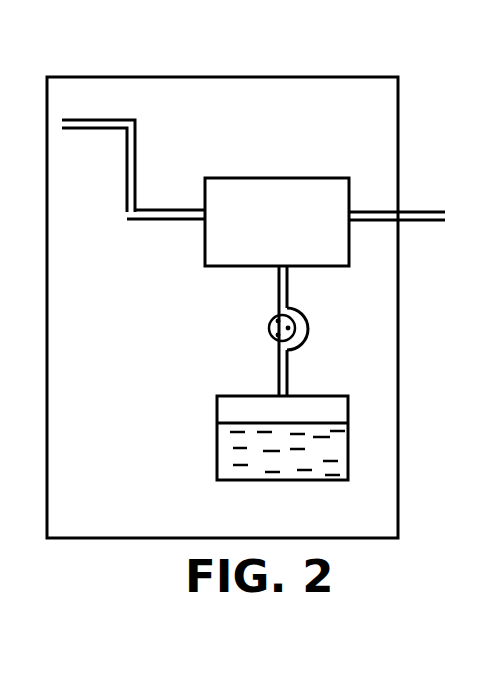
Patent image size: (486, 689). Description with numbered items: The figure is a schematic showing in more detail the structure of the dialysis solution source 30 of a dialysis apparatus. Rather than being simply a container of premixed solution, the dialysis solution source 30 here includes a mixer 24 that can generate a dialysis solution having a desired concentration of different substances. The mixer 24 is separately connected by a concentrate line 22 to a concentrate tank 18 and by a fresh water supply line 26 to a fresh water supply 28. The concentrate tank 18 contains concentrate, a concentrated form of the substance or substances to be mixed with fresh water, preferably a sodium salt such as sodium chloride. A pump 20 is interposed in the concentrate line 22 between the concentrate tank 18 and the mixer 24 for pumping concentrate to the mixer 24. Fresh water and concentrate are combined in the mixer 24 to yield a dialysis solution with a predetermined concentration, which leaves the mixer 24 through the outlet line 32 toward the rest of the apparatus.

The concentrate tank 18 is at (216, 458).
The pump 20 is at (268, 329).
The concentrate line 22 is at (288, 281).
The mixer 24 is at (272, 178).
The fresh water supply line 26 is at (126, 190).
The fresh water supply 28 is at (138, 97).
The dialysis solution source 30 is at (283, 77).
The outlet pipe 32 is at (420, 210).